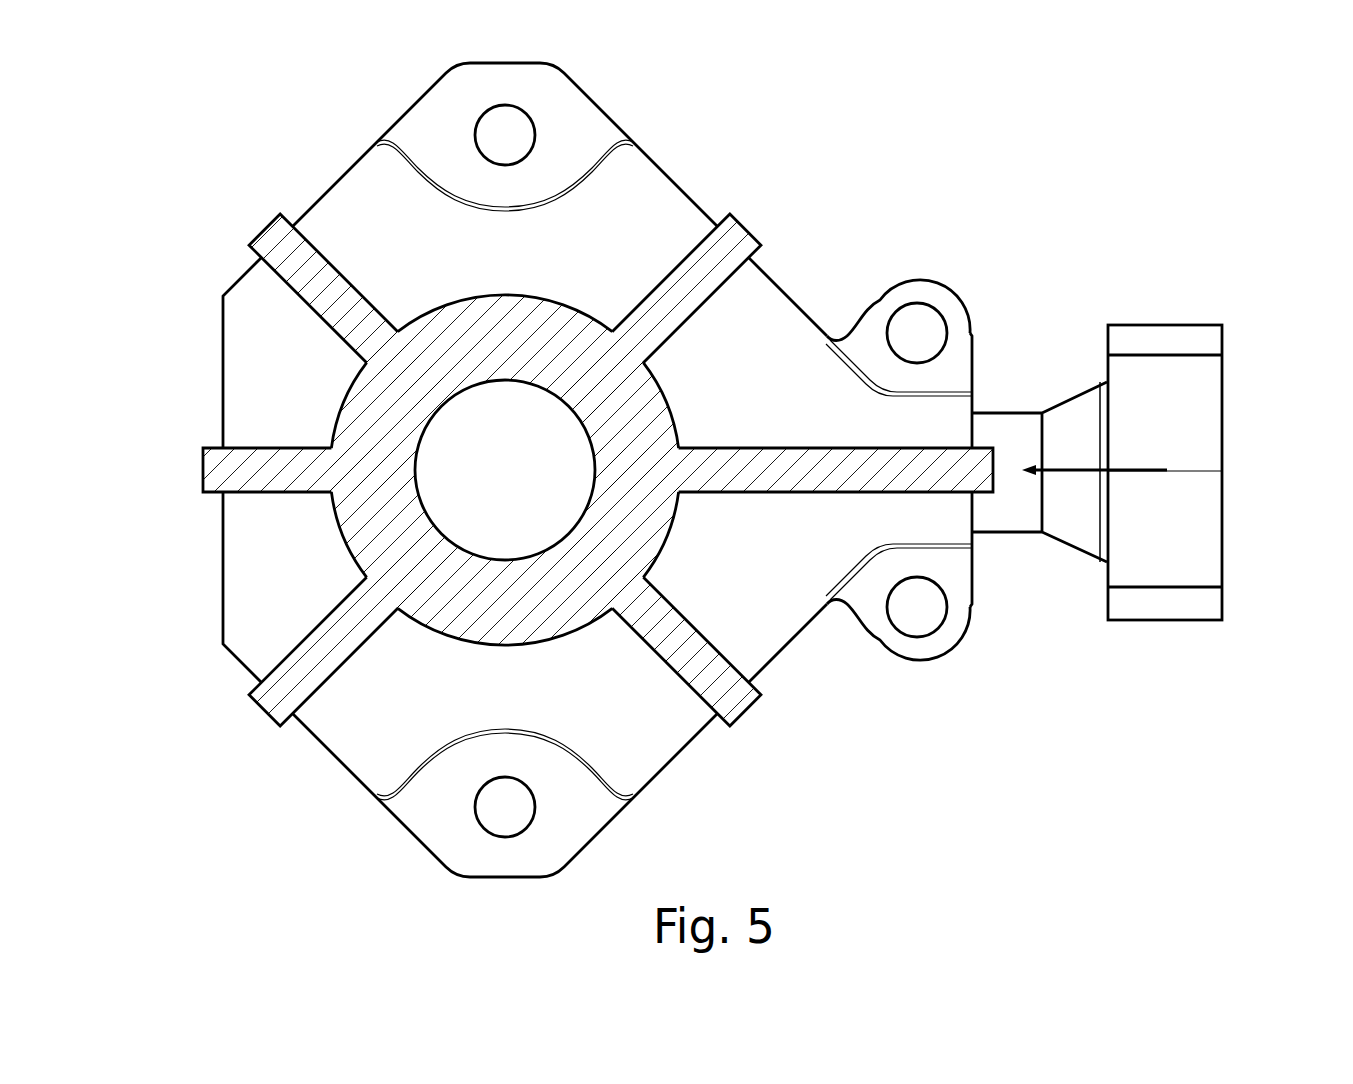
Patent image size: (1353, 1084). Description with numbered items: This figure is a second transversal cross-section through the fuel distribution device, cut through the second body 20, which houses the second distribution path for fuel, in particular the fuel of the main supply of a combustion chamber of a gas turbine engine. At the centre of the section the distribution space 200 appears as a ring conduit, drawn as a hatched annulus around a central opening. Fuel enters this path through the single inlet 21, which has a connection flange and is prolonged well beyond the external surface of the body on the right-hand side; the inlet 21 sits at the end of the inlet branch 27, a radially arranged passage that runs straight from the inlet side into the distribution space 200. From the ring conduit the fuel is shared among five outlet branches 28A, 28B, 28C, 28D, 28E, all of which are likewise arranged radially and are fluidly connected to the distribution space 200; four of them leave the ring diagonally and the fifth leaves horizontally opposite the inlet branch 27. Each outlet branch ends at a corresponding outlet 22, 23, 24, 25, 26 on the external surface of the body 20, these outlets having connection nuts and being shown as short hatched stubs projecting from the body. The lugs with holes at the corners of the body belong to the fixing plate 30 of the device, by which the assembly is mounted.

The second body 20 is at (367, 200).
The distribution space 200 is at (331, 390).
The inlet 21 is at (1182, 420).
The outlet 22 is at (762, 214).
The outlet 23 is at (761, 723).
The outlet 24 is at (248, 730).
The outlet 25 is at (251, 219).
The outlet 26 is at (169, 470).
The inlet branch 27 is at (836, 455).
The outlet branch 28A is at (676, 500).
The outlet branch 28B is at (676, 500).
The outlet branch 28C is at (676, 500).
The outlet branch 28D is at (676, 500).
The outlet branch 28E is at (676, 500).
The fixing plate 30 is at (573, 122).